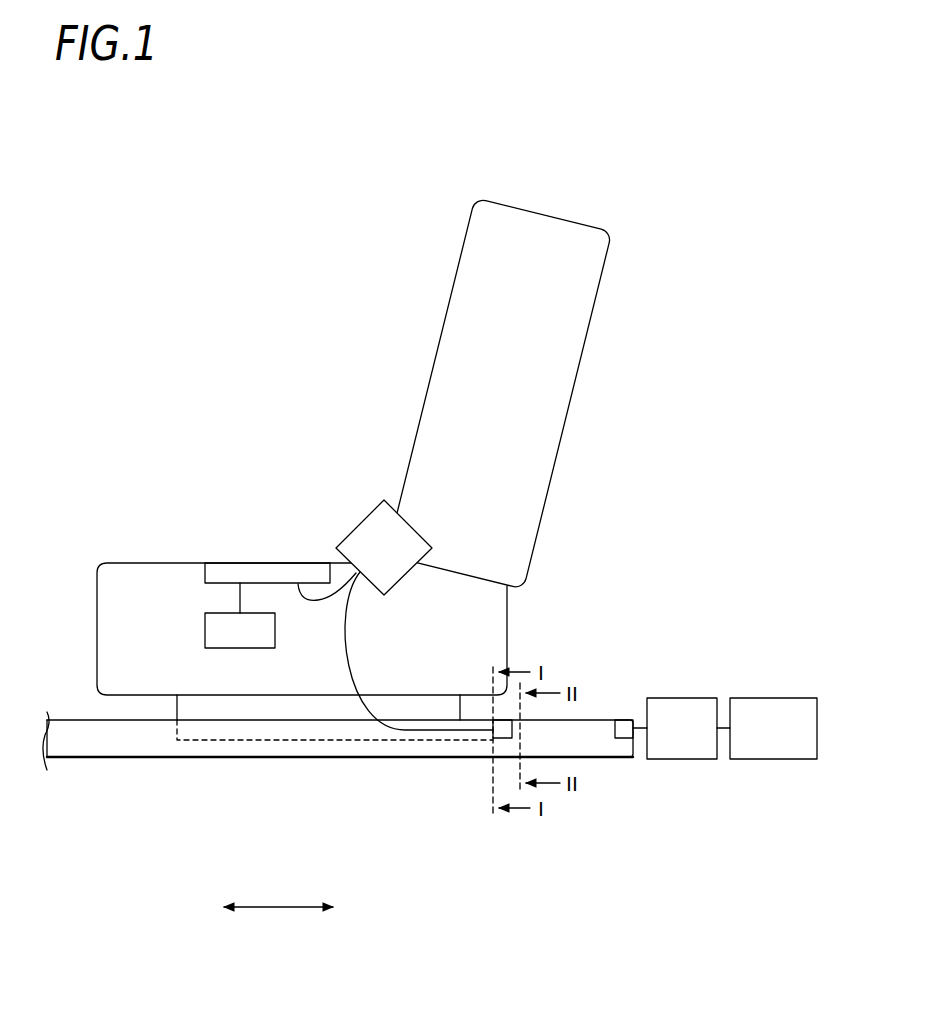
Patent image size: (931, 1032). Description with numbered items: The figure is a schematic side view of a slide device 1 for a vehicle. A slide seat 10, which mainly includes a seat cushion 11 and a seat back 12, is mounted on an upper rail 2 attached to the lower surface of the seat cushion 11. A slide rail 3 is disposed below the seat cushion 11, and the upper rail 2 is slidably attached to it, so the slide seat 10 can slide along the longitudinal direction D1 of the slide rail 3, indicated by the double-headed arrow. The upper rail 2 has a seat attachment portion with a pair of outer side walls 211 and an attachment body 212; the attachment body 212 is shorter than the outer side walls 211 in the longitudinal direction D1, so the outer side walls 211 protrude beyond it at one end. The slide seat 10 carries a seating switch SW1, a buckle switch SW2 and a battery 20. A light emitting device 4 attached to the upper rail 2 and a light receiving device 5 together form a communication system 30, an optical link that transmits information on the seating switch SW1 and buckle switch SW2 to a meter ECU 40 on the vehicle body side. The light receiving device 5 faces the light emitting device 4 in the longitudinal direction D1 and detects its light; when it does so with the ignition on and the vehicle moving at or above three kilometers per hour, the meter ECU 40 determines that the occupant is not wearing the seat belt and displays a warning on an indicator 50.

The slide device 1 is at (341, 845).
The upper rail 2 is at (172, 713).
The slide rail 3 is at (87, 740).
The light emitting device 4 is at (503, 738).
The light receiving device 5 is at (622, 738).
The slide seat 10 is at (610, 267).
The seat cushion 11 is at (133, 578).
The seat back 12 is at (567, 378).
The battery 20 is at (205, 631).
The communication system 30 is at (545, 844).
The meter ECU 40 is at (688, 698).
The indicator 50 is at (768, 698).
The outer side walls 211 is at (303, 740).
The attachment body 212 is at (210, 708).
The seating switch SW1 is at (253, 562).
The buckle switch SW2 is at (418, 527).
The longitudinal direction D1 is at (272, 910).